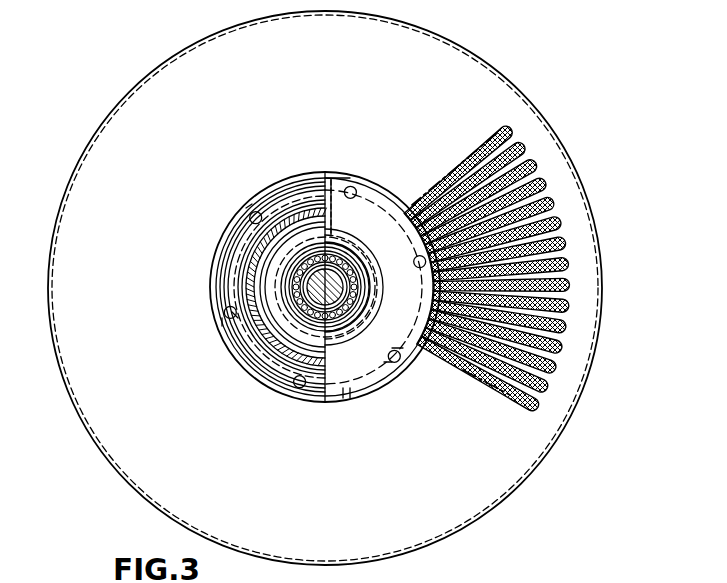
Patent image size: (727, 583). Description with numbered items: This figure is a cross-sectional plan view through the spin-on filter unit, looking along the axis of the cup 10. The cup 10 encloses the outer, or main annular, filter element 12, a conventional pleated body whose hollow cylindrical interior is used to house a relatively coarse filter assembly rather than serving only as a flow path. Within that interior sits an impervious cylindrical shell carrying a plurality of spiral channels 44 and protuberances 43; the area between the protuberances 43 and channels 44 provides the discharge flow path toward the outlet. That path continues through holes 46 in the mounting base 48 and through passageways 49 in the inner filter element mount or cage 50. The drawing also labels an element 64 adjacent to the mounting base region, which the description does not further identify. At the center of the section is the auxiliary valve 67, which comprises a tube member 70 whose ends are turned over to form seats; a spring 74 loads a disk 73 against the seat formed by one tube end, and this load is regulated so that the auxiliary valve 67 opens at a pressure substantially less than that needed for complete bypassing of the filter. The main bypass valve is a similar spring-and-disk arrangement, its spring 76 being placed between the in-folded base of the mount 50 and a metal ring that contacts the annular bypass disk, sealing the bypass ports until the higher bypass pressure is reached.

The cup 10 is at (113, 108).
The outer annular filter element 12 is at (565, 350).
The protuberances 43 is at (212, 313).
The spiral channels 44 is at (349, 187).
The holes 46 is at (313, 397).
The mounting base 48 is at (357, 397).
The passageways 49 is at (250, 325).
The inner filter element mount 50 is at (240, 258).
The hub plate 64 is at (392, 315).
The auxiliary valve 67 is at (308, 323).
The tube member 70 is at (285, 287).
The disk 73 is at (347, 243).
The spring 74 is at (298, 248).
The spring 76 is at (243, 257).